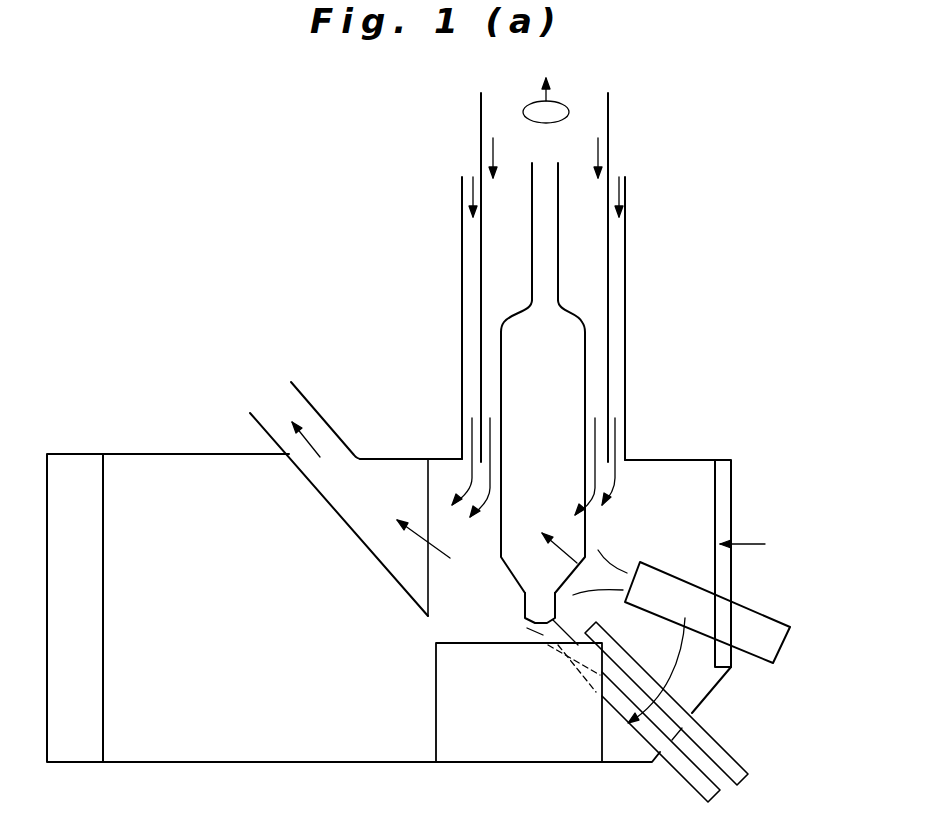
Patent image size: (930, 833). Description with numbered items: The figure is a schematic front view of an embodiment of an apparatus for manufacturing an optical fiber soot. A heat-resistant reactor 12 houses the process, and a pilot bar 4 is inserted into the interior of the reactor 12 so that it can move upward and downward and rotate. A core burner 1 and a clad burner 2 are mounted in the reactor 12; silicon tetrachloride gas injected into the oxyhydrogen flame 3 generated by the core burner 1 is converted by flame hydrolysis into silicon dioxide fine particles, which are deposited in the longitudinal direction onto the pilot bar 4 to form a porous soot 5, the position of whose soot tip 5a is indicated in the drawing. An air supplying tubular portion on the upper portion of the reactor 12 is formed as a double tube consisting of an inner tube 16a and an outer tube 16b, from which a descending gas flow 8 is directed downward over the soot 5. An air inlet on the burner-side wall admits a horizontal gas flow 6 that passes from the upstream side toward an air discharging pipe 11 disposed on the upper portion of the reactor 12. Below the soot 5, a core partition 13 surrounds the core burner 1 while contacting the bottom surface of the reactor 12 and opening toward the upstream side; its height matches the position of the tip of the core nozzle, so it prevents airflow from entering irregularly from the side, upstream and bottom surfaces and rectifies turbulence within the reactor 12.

The core burner 1 is at (713, 803).
The clad burner 2 is at (767, 637).
The oxyhydrogen flame 3 is at (535, 630).
The pilot bar 4 is at (542, 220).
The porous soot 5 is at (556, 338).
The soot tip 5a is at (535, 603).
The horizontal gas flow 6 is at (762, 544).
The descending gas flow 8 is at (483, 143).
The air discharging pipe 11 is at (325, 442).
The heat-resistant reactor 12 is at (145, 453).
The core partition 13 is at (548, 745).
The inner tube 16a is at (610, 240).
The outer tube 16b is at (628, 262).